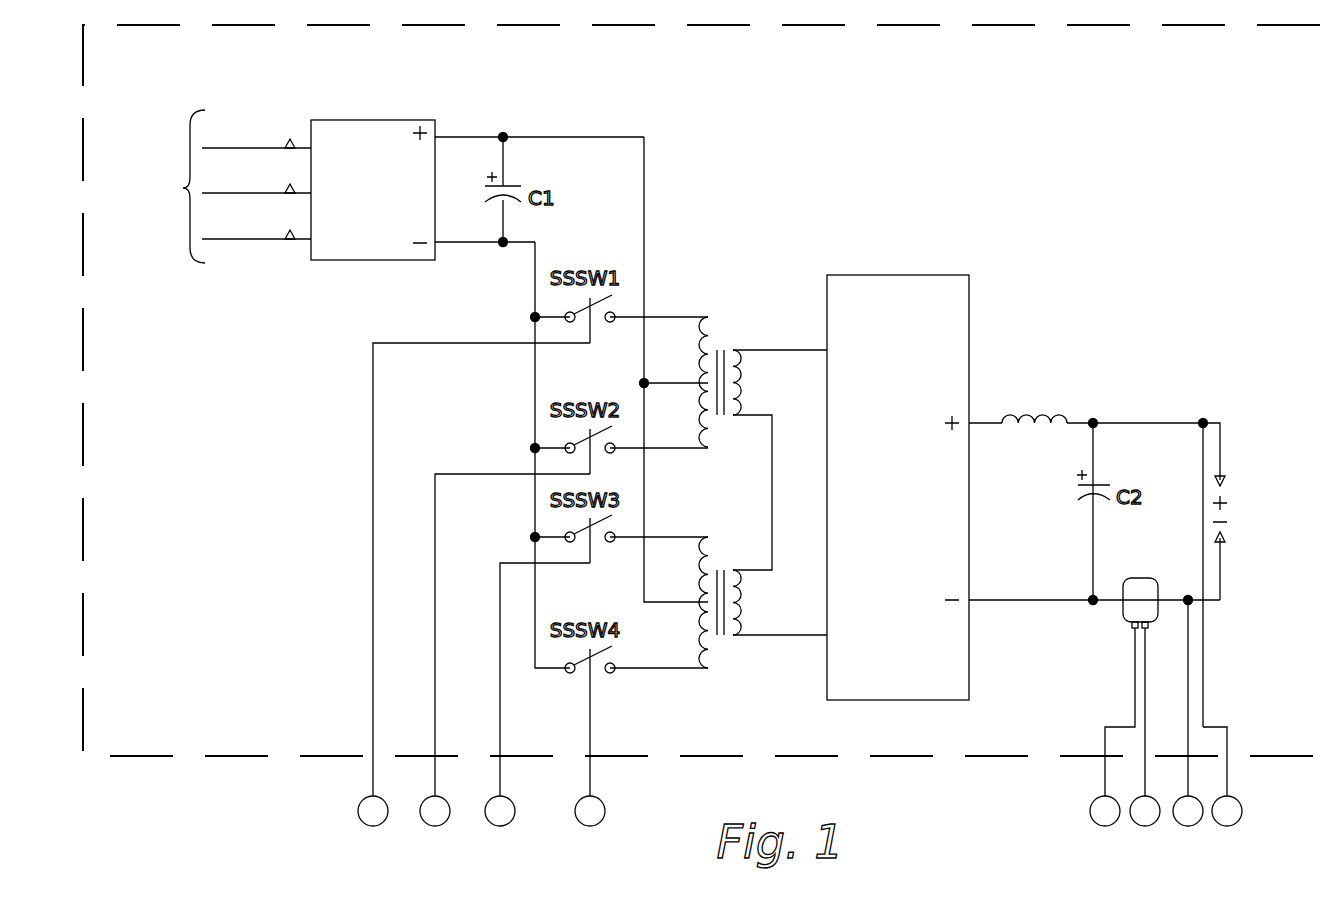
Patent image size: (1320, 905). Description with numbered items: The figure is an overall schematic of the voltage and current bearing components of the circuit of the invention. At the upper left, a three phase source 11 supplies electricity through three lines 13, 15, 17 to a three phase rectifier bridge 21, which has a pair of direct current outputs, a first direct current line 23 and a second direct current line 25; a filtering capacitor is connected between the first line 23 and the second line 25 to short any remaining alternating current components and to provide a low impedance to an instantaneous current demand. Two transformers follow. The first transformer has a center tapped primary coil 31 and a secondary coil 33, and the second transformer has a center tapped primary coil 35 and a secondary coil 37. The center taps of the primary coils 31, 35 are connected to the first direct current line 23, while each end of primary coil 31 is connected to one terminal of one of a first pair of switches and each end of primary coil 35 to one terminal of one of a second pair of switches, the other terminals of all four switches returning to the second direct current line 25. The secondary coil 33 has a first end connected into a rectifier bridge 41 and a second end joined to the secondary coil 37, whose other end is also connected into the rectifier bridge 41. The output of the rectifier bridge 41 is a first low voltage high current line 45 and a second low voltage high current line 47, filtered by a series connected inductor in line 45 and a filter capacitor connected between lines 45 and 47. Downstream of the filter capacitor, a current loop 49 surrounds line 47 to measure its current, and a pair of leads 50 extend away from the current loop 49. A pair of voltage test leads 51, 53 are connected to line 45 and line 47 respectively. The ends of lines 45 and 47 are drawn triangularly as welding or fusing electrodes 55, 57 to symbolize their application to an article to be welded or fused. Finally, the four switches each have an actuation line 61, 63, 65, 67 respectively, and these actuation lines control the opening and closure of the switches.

The three phase source 11 is at (215, 204).
The line 13 is at (270, 148).
The line 15 is at (228, 195).
The line 17 is at (268, 240).
The three phase rectifier bridge 21 is at (420, 120).
The first direct current line 23 is at (590, 137).
The second direct current line 25 is at (460, 243).
The primary coil 31 is at (708, 352).
The secondary coil 33 is at (742, 383).
The primary coil 35 is at (704, 570).
The secondary coil 37 is at (742, 602).
The rectifier bridge 41 is at (898, 473).
The first low voltage high current line 45 is at (996, 423).
The second low voltage high current line 47 is at (1021, 600).
The current loop 49 is at (1143, 578).
The leads 50 is at (1145, 688).
The voltage test lead 51 is at (1203, 449).
The voltage test lead 53 is at (1185, 645).
The welding or fusing electrode 55 is at (1226, 482).
The welding or fusing electrode 57 is at (1226, 538).
The actuation line 61 is at (372, 655).
The actuation line 63 is at (434, 684).
The actuation line 65 is at (499, 713).
The actuation line 67 is at (589, 730).